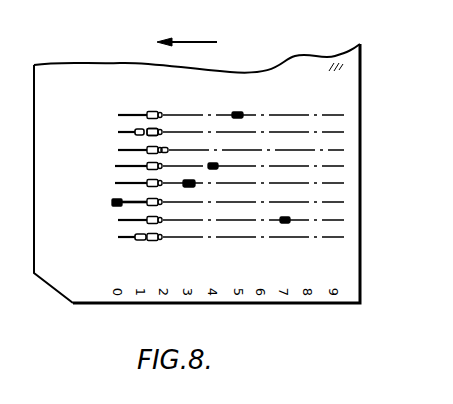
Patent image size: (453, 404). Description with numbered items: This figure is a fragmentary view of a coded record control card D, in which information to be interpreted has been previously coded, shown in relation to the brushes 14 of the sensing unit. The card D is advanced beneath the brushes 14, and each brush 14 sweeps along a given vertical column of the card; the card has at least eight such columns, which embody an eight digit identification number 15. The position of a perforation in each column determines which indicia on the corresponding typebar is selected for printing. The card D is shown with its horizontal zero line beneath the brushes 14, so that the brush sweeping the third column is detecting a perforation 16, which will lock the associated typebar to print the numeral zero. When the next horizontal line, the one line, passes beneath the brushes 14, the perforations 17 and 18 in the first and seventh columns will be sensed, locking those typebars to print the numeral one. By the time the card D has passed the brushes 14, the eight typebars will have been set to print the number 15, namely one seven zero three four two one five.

The brushes 14 is at (130, 130).
The eight digit identification number 15 is at (289, 268).
The perforation 16 is at (112, 205).
The perforation 17 is at (140, 240).
The perforation 18 is at (159, 128).
The record control card D is at (362, 195).